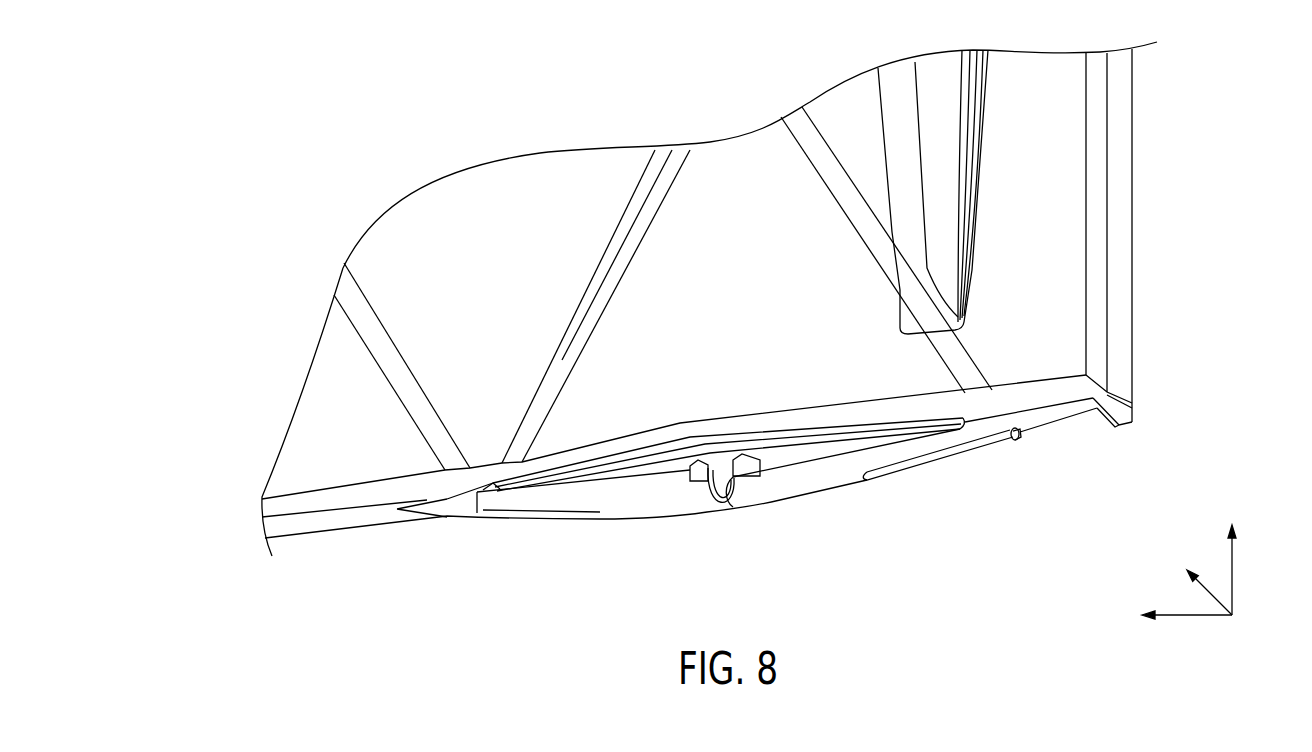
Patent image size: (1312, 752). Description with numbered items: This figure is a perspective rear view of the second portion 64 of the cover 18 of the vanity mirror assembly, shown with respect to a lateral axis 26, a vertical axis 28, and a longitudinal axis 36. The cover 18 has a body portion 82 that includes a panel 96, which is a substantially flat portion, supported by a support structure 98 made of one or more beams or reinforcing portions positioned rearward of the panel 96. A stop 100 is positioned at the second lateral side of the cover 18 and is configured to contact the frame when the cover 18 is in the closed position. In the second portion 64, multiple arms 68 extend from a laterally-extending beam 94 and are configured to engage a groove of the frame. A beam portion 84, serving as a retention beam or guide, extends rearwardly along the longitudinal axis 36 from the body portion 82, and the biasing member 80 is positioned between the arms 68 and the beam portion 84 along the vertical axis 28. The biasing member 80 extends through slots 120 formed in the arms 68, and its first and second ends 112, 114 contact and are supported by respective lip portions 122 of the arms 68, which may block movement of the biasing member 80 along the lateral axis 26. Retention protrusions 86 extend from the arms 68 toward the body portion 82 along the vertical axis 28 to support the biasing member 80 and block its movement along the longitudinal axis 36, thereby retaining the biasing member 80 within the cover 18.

The cover 18 is at (1193, 72).
The body portion 82 is at (1145, 148).
The panel 96 is at (1050, 235).
The support structure 98 is at (1120, 297).
The beam 94 is at (1065, 392).
The stop 100 is at (1126, 427).
The second portion 64 is at (707, 549).
The beam portion 84 is at (795, 417).
The retention protrusion 86 is at (745, 456).
The biasing member 80 is at (588, 487).
The arm 68 is at (648, 503).
The first end 112 is at (450, 517).
The second end 114 is at (1018, 438).
The slot 120 is at (512, 515).
The lip portion 122 is at (447, 518).
The lateral axis 26 is at (1190, 617).
The vertical axis 28 is at (1233, 572).
The longitudinal axis 36 is at (1213, 592).